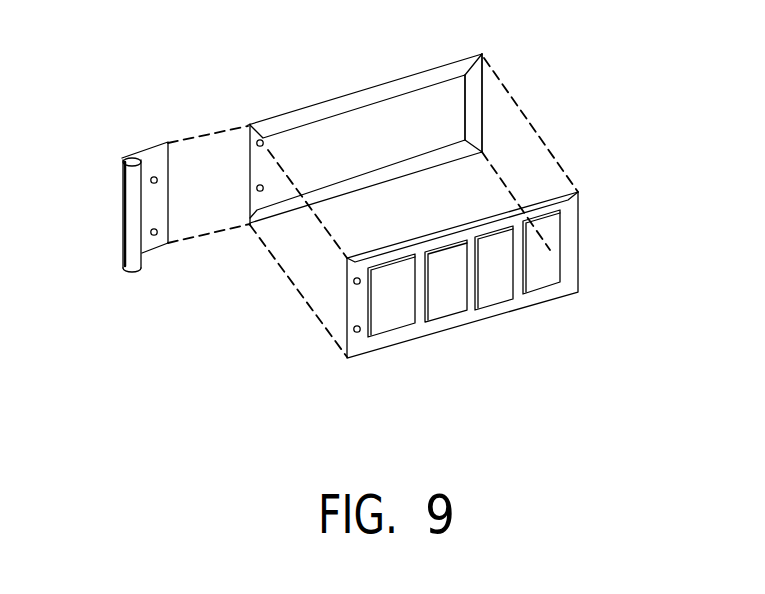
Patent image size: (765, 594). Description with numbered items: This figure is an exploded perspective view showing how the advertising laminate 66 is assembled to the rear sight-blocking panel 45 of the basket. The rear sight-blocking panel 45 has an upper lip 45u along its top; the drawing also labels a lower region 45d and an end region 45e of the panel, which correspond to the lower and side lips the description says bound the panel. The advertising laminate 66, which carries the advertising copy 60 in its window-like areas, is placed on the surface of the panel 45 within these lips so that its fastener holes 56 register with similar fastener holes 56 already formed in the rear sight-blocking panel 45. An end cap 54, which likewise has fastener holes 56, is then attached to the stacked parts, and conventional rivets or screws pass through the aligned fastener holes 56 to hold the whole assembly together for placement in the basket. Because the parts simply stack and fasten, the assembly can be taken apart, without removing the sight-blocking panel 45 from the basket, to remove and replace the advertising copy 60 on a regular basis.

The end cap 54 is at (130, 213).
The fastener holes 56 is at (257, 143).
The rear sight-blocking panel 45 is at (426, 123).
The upper lip 45u is at (340, 100).
The lower edge of panel 45d is at (366, 181).
The end of panel 45e is at (484, 121).
The advertising laminate 66 is at (499, 285).
The advertising copy 60 is at (437, 292).